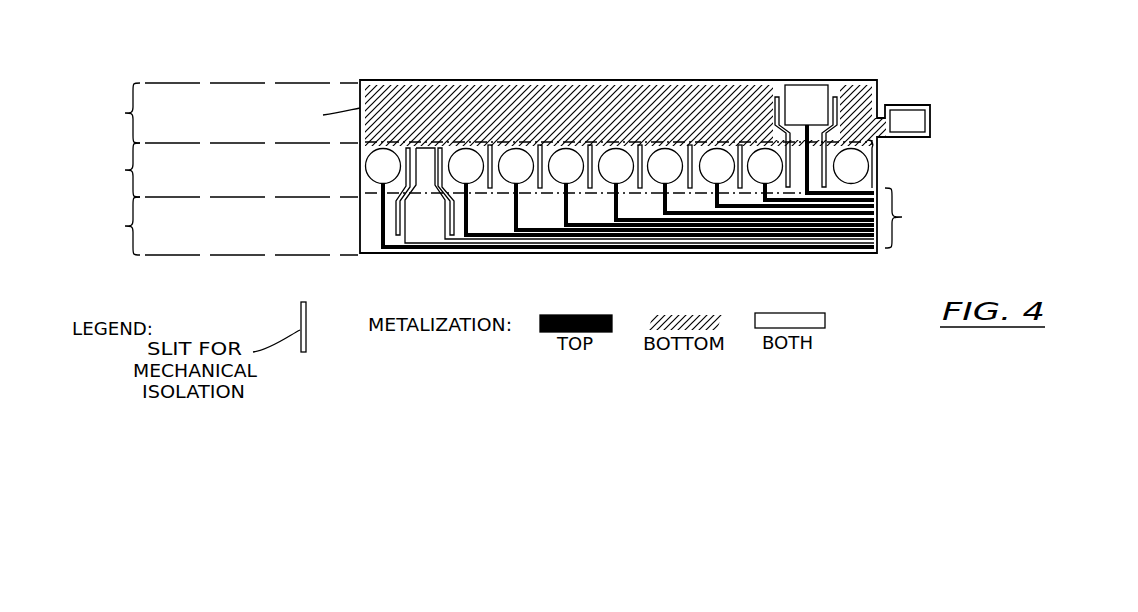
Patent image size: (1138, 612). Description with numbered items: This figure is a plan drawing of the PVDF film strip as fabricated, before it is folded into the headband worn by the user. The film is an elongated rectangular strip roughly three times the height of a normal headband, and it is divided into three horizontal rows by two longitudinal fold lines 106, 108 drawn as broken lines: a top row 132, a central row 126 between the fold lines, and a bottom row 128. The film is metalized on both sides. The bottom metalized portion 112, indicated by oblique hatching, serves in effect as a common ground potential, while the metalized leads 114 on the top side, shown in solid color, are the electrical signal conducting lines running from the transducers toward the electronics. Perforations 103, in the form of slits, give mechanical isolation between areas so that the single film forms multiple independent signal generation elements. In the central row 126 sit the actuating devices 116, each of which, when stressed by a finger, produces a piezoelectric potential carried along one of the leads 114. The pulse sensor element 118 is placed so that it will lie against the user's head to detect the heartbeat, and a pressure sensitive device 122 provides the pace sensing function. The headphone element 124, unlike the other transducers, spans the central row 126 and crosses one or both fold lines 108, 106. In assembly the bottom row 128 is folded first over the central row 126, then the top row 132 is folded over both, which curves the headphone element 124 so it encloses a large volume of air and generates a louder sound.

The top row 132 is at (225, 113).
The central row 126 is at (224, 170).
The bottom row 128 is at (224, 226).
The fold line 106 is at (370, 143).
The fold line 108 is at (370, 193).
The perforations 103 is at (553, 145).
The bottom metalized portion 112 is at (407, 107).
The actuating device 116 is at (510, 148).
The pulse sensor element 118 is at (805, 97).
The pressure sensitive device 122 is at (912, 115).
The headphone element 124 is at (424, 226).
The metalized leads 114 is at (773, 236).